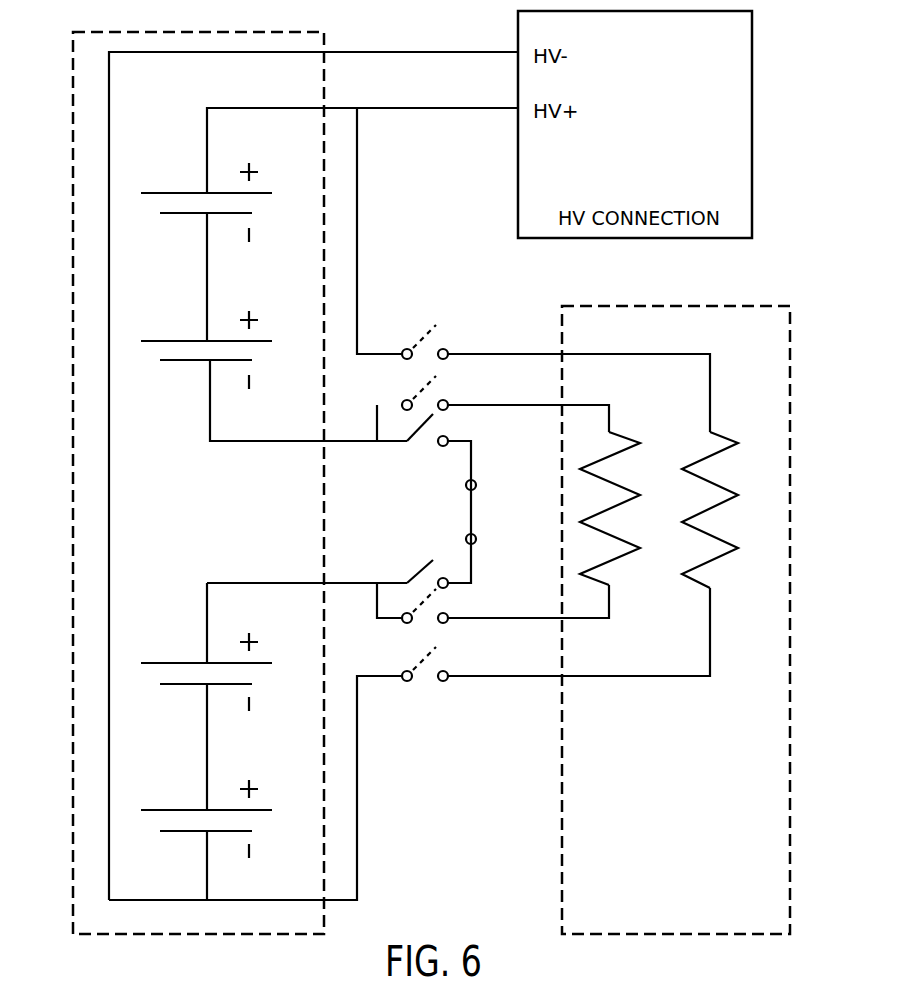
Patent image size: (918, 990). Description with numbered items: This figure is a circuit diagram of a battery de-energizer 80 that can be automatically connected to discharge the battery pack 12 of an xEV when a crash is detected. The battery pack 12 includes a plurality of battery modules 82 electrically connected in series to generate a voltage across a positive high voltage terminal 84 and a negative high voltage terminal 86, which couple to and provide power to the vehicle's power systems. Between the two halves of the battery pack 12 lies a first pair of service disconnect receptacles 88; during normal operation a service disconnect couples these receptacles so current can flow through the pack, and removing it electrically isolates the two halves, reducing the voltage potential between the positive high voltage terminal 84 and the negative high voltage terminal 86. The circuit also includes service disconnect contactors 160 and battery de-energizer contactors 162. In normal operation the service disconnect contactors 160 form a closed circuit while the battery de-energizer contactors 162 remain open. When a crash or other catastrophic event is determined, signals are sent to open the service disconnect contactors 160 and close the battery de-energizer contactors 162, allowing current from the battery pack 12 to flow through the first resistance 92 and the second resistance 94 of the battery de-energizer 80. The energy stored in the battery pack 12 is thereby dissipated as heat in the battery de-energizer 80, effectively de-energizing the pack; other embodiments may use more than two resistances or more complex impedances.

The battery pack 12 is at (72, 530).
The battery de-energizer 80 is at (773, 306).
The battery modules 82 is at (185, 193).
The positive high voltage terminal 84 is at (518, 106).
The negative high voltage terminal 86 is at (518, 50).
The first pair of service disconnect receptacles 88 is at (476, 484).
The first resistance 92 is at (633, 436).
The second resistance 94 is at (728, 436).
The service disconnect contactors 160 is at (441, 576).
The battery de-energizer contactors 162 is at (404, 352).